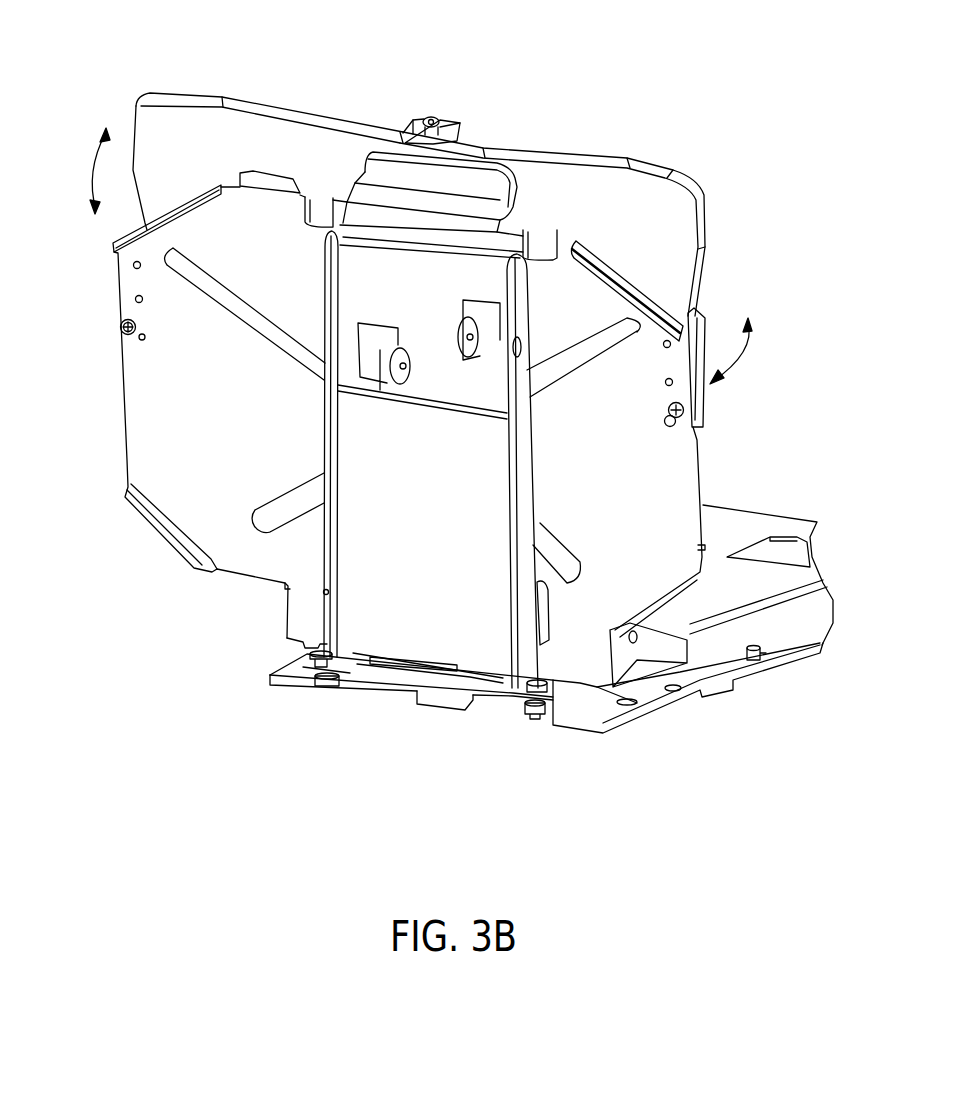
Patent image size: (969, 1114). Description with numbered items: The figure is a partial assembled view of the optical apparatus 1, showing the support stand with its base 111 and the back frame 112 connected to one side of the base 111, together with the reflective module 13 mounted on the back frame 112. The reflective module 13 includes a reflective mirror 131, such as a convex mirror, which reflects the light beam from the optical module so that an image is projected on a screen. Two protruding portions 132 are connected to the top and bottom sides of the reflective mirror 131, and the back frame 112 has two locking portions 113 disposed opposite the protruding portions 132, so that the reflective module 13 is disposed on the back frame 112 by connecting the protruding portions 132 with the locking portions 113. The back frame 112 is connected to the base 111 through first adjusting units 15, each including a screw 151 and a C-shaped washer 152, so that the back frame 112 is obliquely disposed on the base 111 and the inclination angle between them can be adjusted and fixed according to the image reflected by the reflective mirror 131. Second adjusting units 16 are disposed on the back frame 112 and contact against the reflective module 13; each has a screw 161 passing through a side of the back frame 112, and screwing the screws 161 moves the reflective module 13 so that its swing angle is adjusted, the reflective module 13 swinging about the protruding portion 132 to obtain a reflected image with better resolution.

The optical apparatus 1 is at (568, 76).
The reflective module 13 is at (676, 172).
The reflective mirror 131 is at (193, 97).
The protruding portion 132 is at (428, 118).
The locking portion 113 is at (443, 130).
The back frame 112 is at (154, 440).
The second adjusting unit 16 is at (121, 337).
The screw 161 is at (120, 322).
The first adjusting unit 15 is at (228, 613).
The screw 151 is at (317, 652).
The washer 152 is at (307, 673).
The base 111 is at (737, 663).